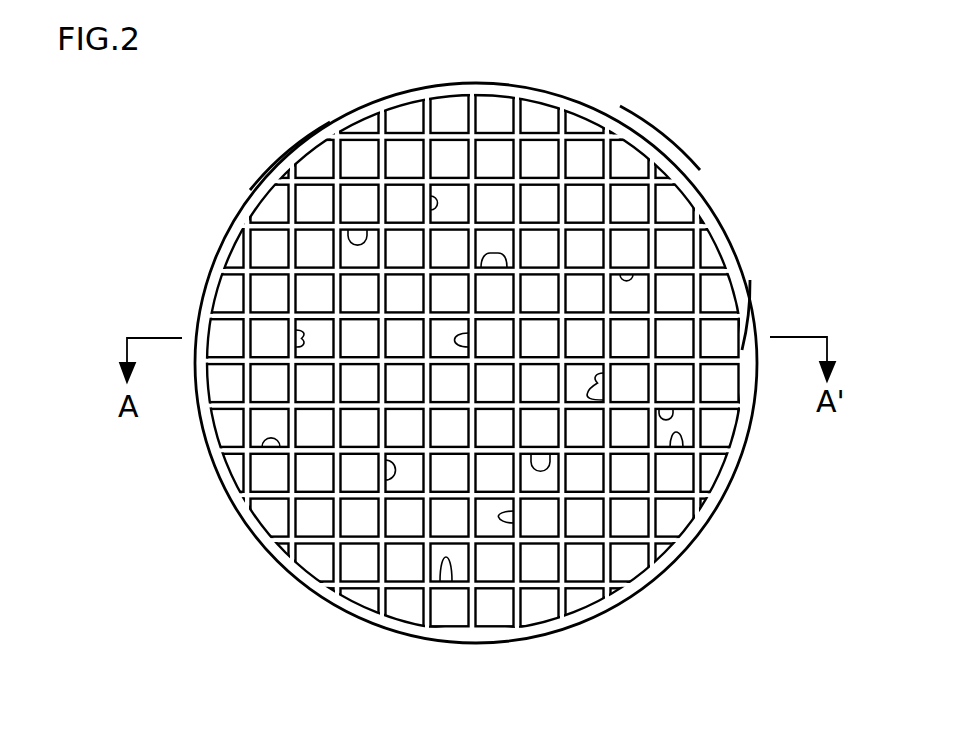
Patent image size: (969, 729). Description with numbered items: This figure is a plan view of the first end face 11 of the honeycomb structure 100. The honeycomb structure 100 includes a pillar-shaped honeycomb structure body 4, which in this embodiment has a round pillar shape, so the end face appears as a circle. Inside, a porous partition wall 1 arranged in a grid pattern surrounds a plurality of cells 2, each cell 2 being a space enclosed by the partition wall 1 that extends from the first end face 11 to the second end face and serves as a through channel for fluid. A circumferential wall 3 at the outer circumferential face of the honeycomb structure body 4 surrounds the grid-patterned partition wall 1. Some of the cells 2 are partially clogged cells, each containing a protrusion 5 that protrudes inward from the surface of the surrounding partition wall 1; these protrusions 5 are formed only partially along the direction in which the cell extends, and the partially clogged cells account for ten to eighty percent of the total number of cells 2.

The honeycomb structure 100 is at (820, 50).
The first end face 11 is at (278, 142).
The partition wall 1 is at (582, 182).
The cell 2 is at (628, 202).
The protrusion 5 is at (622, 281).
The honeycomb structure body 4 is at (764, 312).
The circumferential wall 3 is at (695, 528).